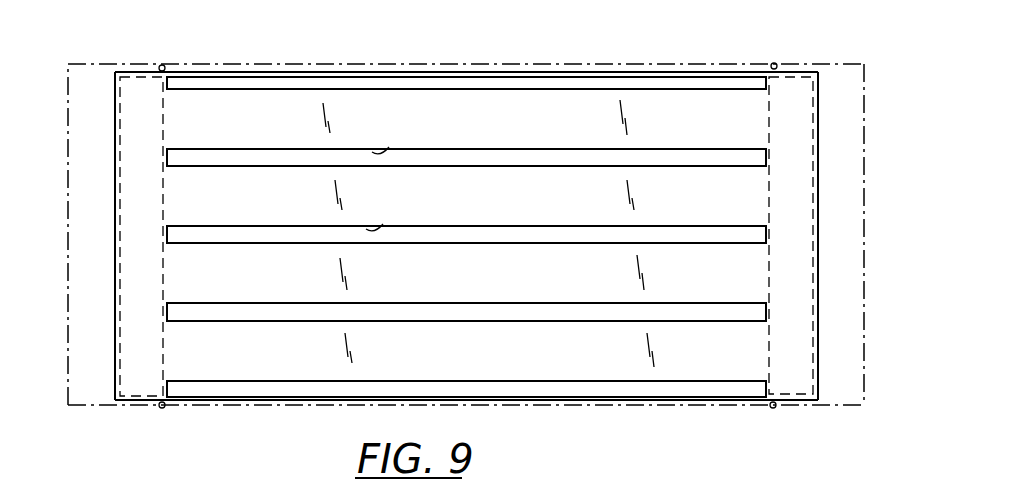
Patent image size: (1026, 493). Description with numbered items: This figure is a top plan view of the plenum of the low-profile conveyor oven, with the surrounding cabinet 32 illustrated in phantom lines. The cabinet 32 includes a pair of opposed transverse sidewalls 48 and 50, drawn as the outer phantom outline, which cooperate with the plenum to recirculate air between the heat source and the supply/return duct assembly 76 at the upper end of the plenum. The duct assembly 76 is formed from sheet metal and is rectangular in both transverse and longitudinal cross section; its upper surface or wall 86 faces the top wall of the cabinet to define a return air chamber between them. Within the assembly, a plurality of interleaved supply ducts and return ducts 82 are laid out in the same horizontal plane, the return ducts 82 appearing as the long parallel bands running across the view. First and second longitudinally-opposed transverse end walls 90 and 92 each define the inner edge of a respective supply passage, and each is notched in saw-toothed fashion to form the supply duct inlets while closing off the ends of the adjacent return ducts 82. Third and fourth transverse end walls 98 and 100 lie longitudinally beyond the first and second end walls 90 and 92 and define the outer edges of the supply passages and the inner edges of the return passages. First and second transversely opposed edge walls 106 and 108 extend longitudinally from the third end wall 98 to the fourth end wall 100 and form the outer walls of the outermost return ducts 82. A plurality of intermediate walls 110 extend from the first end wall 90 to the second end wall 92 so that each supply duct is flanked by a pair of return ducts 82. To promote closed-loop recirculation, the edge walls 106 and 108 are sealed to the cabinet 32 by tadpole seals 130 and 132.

The cabinet 32 is at (843, 408).
The transverse sidewall 48 is at (69, 391).
The transverse sidewall 50 is at (864, 214).
The supply/return duct assembly 76 is at (634, 63).
The return ducts 82 is at (258, 313).
The upper surface or wall 86 is at (678, 362).
The first transverse end wall 90 is at (770, 268).
The second transverse end wall 92 is at (163, 208).
The third transverse end wall 98 is at (820, 328).
The fourth transverse end wall 100 is at (115, 317).
The first transverse edge wall 106 is at (605, 400).
The second transverse edge wall 108 is at (485, 72).
The intermediate walls 110 is at (386, 164).
The tadpole seal 130 is at (773, 406).
The tadpole seal 132 is at (777, 64).